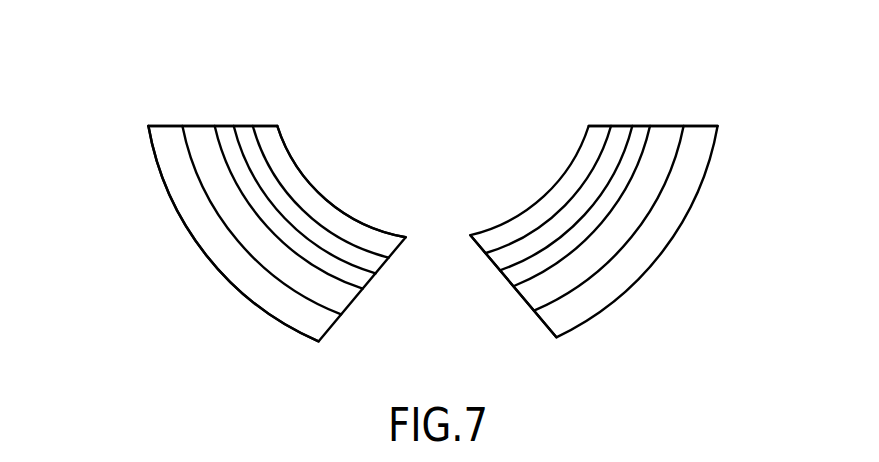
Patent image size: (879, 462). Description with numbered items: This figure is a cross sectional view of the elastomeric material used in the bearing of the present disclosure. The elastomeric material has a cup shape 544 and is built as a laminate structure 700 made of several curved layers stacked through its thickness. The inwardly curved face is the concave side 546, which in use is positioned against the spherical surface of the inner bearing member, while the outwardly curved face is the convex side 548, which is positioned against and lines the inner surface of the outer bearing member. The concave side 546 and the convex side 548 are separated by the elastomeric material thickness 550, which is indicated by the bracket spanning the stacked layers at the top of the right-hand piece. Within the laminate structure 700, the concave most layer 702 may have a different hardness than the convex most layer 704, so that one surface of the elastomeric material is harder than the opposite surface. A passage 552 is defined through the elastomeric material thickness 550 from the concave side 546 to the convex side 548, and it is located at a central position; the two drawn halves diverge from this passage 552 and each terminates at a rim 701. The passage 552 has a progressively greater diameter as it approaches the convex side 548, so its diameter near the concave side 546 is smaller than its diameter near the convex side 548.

The laminate structure 700 is at (134, 270).
The rim 701 is at (728, 94).
The concave most layer 702 is at (265, 125).
The convex most layer 704 is at (158, 125).
The cup shape 544 is at (337, 132).
The concave side 546 is at (347, 215).
The convex side 548 is at (242, 295).
The elastomeric material thickness 550 is at (591, 116).
The passage 552 is at (445, 222).